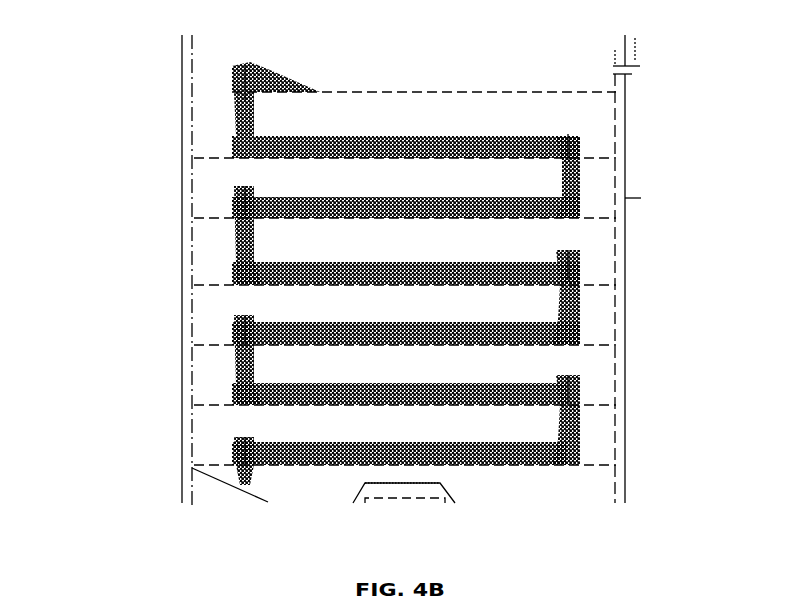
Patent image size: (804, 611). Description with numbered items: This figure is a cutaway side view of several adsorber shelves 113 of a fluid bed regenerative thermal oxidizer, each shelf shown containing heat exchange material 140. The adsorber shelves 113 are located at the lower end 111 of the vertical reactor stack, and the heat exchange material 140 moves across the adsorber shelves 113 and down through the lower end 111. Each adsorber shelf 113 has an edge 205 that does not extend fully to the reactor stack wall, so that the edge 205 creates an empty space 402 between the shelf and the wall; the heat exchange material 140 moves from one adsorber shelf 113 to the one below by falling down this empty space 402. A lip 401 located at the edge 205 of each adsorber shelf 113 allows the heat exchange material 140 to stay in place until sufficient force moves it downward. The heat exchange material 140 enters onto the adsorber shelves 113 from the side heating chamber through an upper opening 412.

The lower end 111 is at (182, 338).
The adsorber shelf 113 is at (247, 95).
The heat exchange material 140 is at (237, 135).
The edge 205 is at (565, 386).
The lip 401 is at (565, 136).
The empty space 402 is at (613, 285).
The upper opening 412 is at (640, 66).